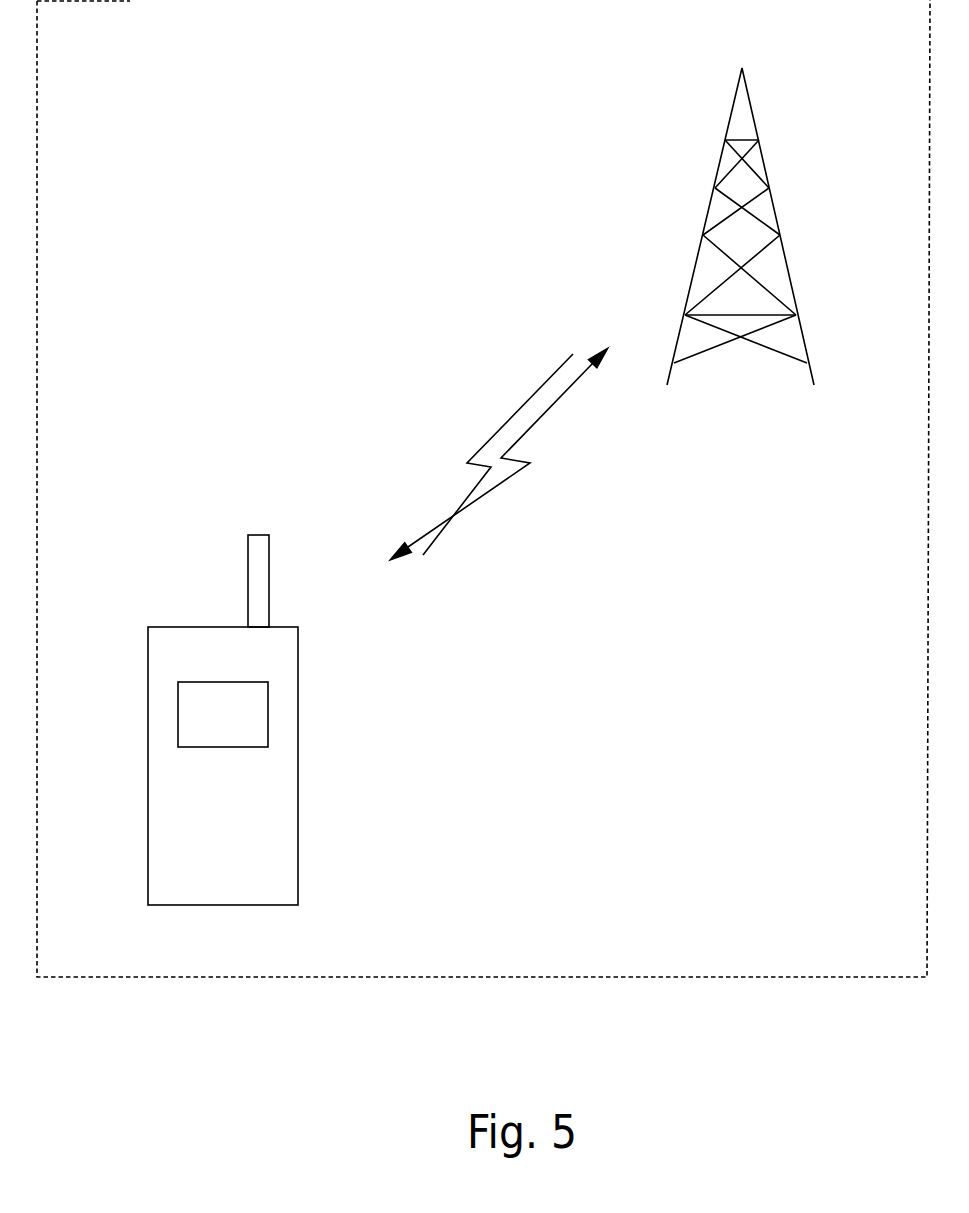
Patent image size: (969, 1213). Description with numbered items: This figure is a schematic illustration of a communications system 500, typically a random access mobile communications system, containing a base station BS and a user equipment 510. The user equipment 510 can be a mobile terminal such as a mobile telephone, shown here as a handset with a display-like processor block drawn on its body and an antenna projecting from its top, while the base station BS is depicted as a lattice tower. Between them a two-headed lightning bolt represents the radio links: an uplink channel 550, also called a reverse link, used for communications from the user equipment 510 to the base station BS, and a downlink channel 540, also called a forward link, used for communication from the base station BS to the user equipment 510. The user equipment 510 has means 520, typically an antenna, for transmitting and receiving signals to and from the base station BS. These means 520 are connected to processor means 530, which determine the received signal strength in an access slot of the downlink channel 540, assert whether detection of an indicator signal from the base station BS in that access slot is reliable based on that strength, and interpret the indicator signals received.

The communications system 500 is at (177, 61).
The user equipment 510 is at (291, 706).
The means for transmitting/receiving signals 520 is at (248, 570).
The processor means 530 is at (223, 714).
The downlink channel 540 is at (452, 438).
The uplink channel 550 is at (547, 506).
The base station BS is at (740, 251).